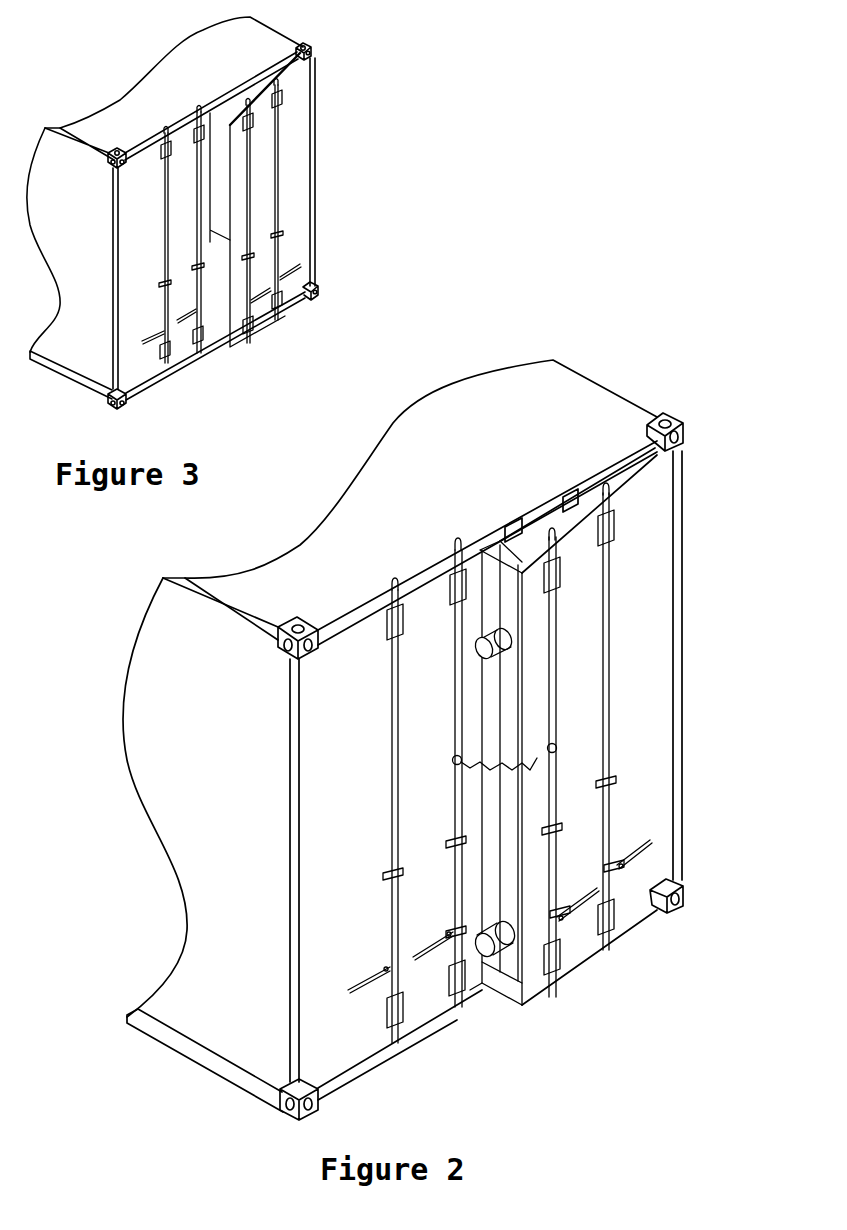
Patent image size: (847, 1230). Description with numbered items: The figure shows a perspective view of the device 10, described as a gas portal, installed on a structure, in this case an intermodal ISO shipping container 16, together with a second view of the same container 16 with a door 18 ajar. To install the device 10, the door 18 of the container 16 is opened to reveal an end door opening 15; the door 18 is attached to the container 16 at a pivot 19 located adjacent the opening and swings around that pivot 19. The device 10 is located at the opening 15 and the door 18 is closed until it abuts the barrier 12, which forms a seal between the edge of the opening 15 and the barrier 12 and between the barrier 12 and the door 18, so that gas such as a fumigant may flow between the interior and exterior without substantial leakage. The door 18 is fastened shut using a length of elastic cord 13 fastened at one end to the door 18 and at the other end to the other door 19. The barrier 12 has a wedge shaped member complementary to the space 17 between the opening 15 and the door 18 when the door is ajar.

In FIG. 2, the device 10 is at (498, 1010).
In FIG. 2, the barrier 12 is at (487, 603).
In FIG. 2, the elastic cord 13 is at (537, 758).
In FIG. 3, the end door opening 15 is at (218, 318).
In FIG. 2, the shipping container 16 is at (587, 405).
In FIG. 3, the shipping container 16 is at (265, 35).
In FIG. 3, the space 17 is at (219, 306).
In FIG. 2, the door 18 is at (630, 890).
In FIG. 3, the door 18 is at (283, 297).
In FIG. 2, the pivot 19 is at (680, 522).
In FIG. 3, the pivot 19 is at (313, 118).